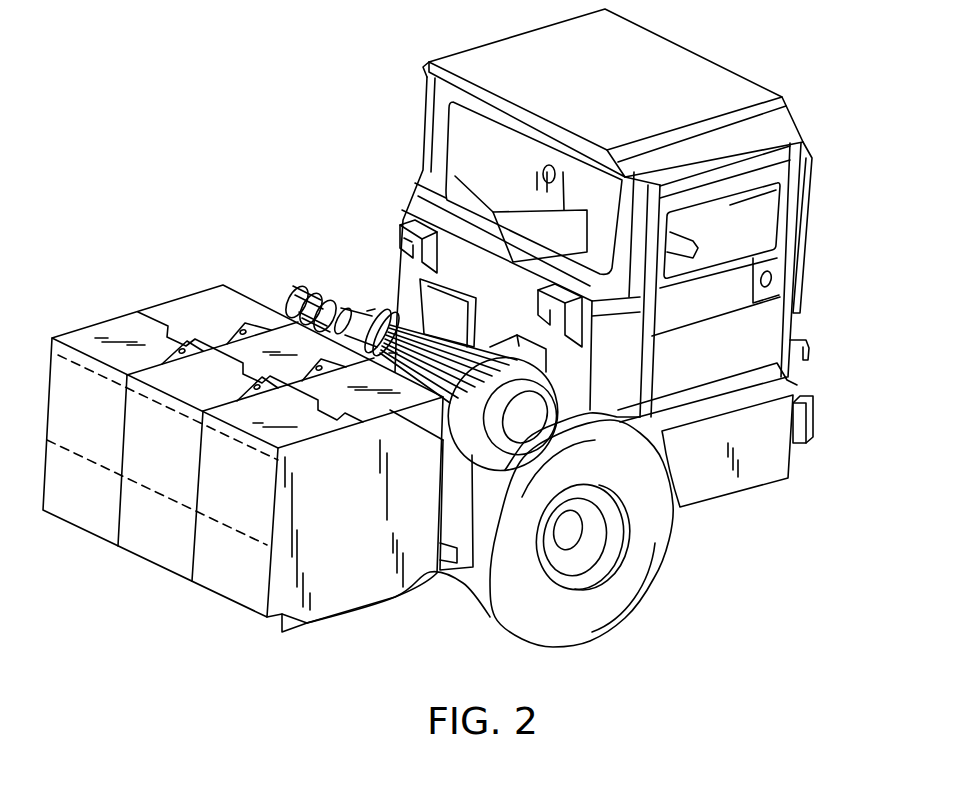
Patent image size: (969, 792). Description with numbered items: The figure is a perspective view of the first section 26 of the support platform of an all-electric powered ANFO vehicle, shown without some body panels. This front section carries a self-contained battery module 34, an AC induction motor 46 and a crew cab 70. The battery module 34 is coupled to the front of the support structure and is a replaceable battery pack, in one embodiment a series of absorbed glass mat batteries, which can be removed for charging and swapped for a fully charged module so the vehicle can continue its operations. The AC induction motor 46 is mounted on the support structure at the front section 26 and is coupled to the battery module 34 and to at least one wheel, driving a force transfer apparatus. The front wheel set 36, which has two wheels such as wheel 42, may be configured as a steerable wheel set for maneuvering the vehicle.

The first section 26 is at (775, 528).
The battery module 34 is at (134, 260).
The wheel set 36 is at (635, 556).
The wheel 42 is at (653, 578).
The AC induction motor 46 is at (338, 260).
The crew cab 70 is at (416, 41).